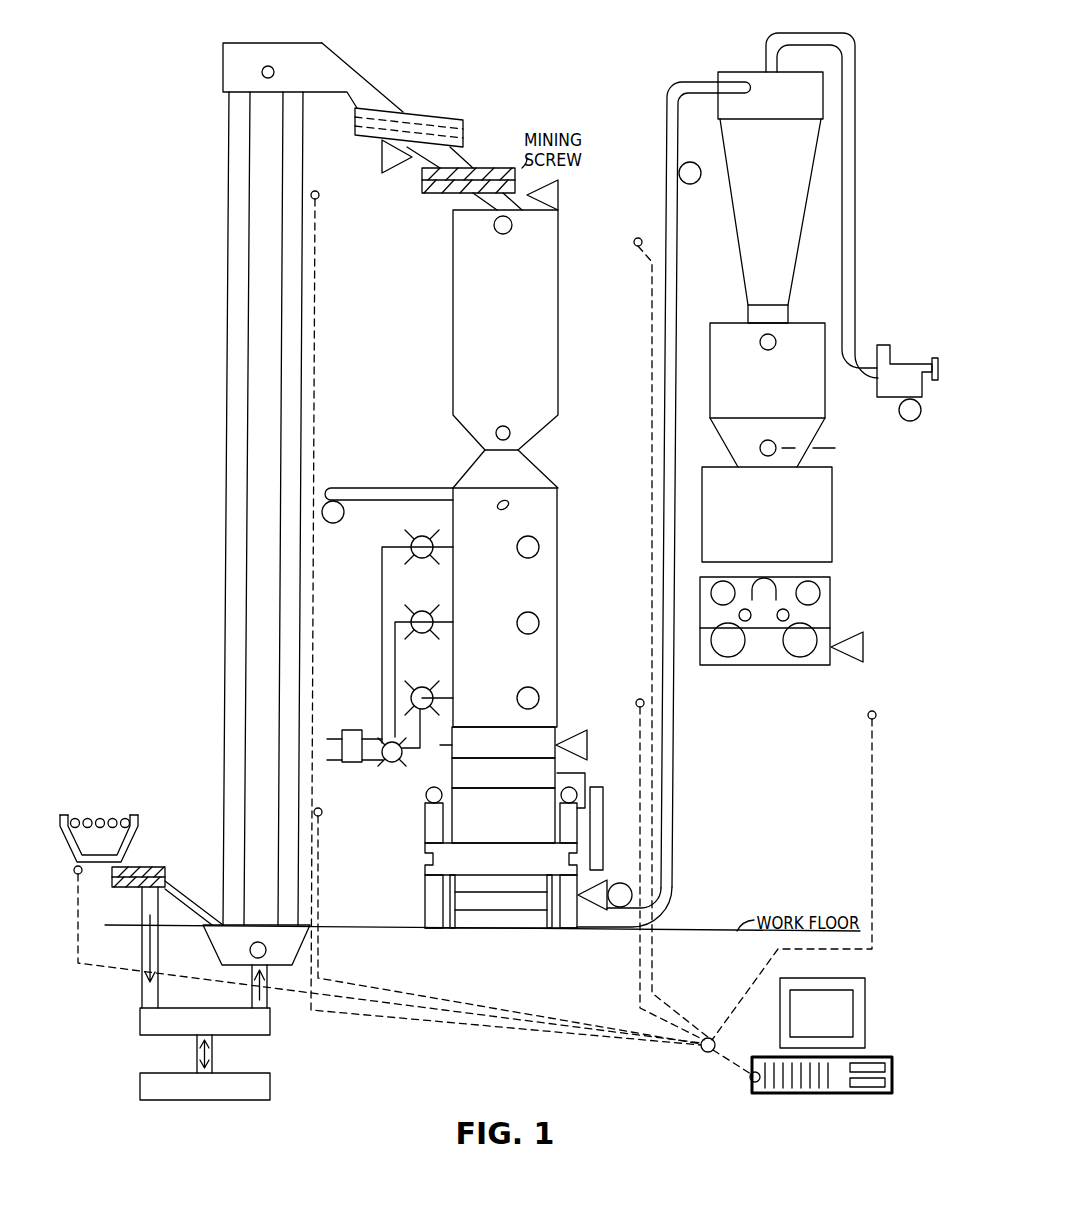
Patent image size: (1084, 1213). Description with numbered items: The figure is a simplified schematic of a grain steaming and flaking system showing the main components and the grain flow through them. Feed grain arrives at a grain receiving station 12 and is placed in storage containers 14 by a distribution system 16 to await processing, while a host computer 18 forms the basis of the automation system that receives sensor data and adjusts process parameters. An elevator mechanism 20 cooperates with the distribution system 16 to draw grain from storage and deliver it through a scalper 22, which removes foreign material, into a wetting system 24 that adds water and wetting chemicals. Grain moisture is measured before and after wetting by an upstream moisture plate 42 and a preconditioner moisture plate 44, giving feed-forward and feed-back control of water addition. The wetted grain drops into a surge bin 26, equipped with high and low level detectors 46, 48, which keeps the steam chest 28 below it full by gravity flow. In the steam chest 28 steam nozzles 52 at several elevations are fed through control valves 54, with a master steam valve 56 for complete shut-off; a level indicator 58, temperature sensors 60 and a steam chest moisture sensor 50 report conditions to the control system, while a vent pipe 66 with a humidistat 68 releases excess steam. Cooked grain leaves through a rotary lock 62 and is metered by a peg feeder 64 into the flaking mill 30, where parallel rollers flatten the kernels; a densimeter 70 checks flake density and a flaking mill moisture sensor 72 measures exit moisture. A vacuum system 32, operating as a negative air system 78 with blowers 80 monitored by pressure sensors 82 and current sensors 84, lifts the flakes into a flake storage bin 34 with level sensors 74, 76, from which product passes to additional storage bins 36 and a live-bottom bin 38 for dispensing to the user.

The grain receiving station 12 is at (110, 806).
The storage containers 14 is at (270, 1092).
The distribution system 16 is at (270, 1025).
The host computer 18 is at (865, 990).
The elevator mechanism 20 is at (223, 172).
The scalper 22 is at (466, 118).
The wetting chamber or system 24 is at (475, 167).
The surge bin 26 is at (499, 312).
The steam chest 28 is at (547, 607).
The flaking mill 30 is at (585, 827).
The vacuum system 32 is at (666, 148).
The flake storage bin 34 is at (758, 374).
The additional storage bins 36 is at (832, 518).
The live-bottom bin 38 is at (830, 585).
The upstream moisture plate 42 is at (382, 160).
The preconditioner moisture plate 44 is at (560, 195).
The high level detector 46 is at (494, 225).
The low level detector 48 is at (496, 437).
The steam chest moisture sensor 50 is at (590, 741).
The steam nozzles 52 is at (453, 632).
The control valves 54 is at (409, 682).
The master steam valve 56 is at (352, 730).
The level indicator 58 is at (508, 503).
The temperature sensors 60 is at (539, 628).
The rotary lock 62 is at (440, 746).
The peg feeder 64 is at (436, 793).
The vent pipe 66 is at (361, 487).
The humidistat 68 is at (335, 523).
The densimeter 70 is at (605, 907).
The flaking mill moisture sensor 72 is at (594, 912).
The level sensor 74 is at (760, 336).
The level sensor 76 is at (760, 448).
The negative air system 78 is at (748, 72).
The blowers 80 is at (922, 382).
The pressure sensors 82 is at (701, 175).
The current sensors 84 is at (899, 412).